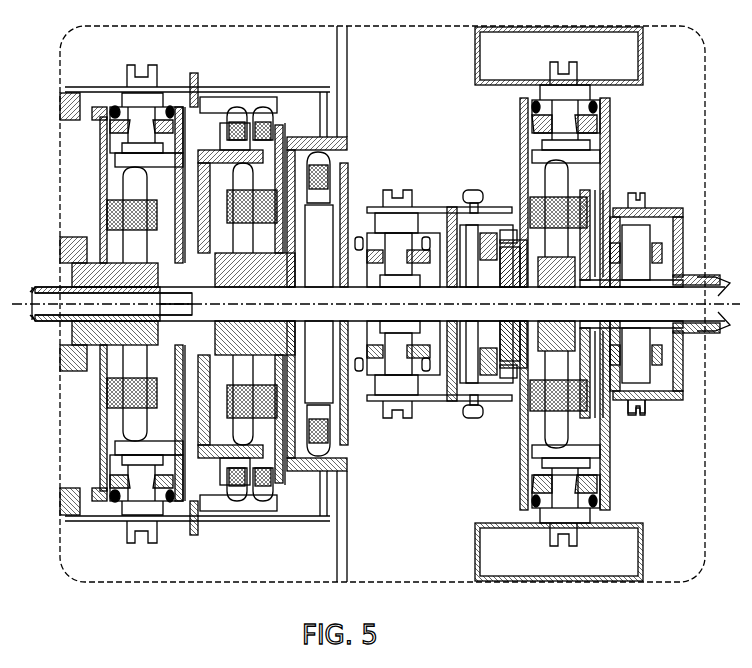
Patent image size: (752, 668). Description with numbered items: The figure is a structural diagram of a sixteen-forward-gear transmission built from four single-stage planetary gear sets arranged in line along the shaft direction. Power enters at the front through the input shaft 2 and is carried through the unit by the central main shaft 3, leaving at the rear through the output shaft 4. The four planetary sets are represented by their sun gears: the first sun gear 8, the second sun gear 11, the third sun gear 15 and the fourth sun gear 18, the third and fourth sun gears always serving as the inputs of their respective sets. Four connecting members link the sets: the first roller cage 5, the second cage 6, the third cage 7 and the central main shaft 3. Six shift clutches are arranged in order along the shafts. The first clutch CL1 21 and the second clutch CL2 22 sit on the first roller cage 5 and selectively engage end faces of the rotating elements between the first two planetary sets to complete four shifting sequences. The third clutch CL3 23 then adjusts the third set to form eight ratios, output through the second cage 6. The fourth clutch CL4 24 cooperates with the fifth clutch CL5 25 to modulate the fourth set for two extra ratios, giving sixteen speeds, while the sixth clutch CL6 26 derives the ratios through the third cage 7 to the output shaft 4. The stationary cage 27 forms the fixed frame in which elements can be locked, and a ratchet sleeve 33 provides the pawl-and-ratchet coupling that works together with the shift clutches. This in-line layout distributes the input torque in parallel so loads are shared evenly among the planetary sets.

The input shaft 2 is at (27, 293).
The central main shaft 3 is at (376, 304).
The output shaft 4 is at (716, 282).
The first roller cage 5 is at (317, 304).
The second cage 6 is at (448, 207).
The third cage 7 is at (657, 303).
The first sun gear 8 is at (109, 304).
The second sun gear 11 is at (255, 304).
The third sun gear 15 is at (326, 304).
The fourth sun gear 18 is at (537, 304).
The first clutch CL1 21 is at (131, 73).
The second clutch CL2 22 is at (173, 539).
The third clutch CL3 23 is at (397, 309).
The fourth clutch CL4 24 is at (490, 309).
The fifth clutch CL5 25 is at (559, 56).
The sixth clutch CL6 26 is at (636, 419).
The stationary cage 27 is at (559, 552).
The ratchet sleeve 33 is at (253, 100).